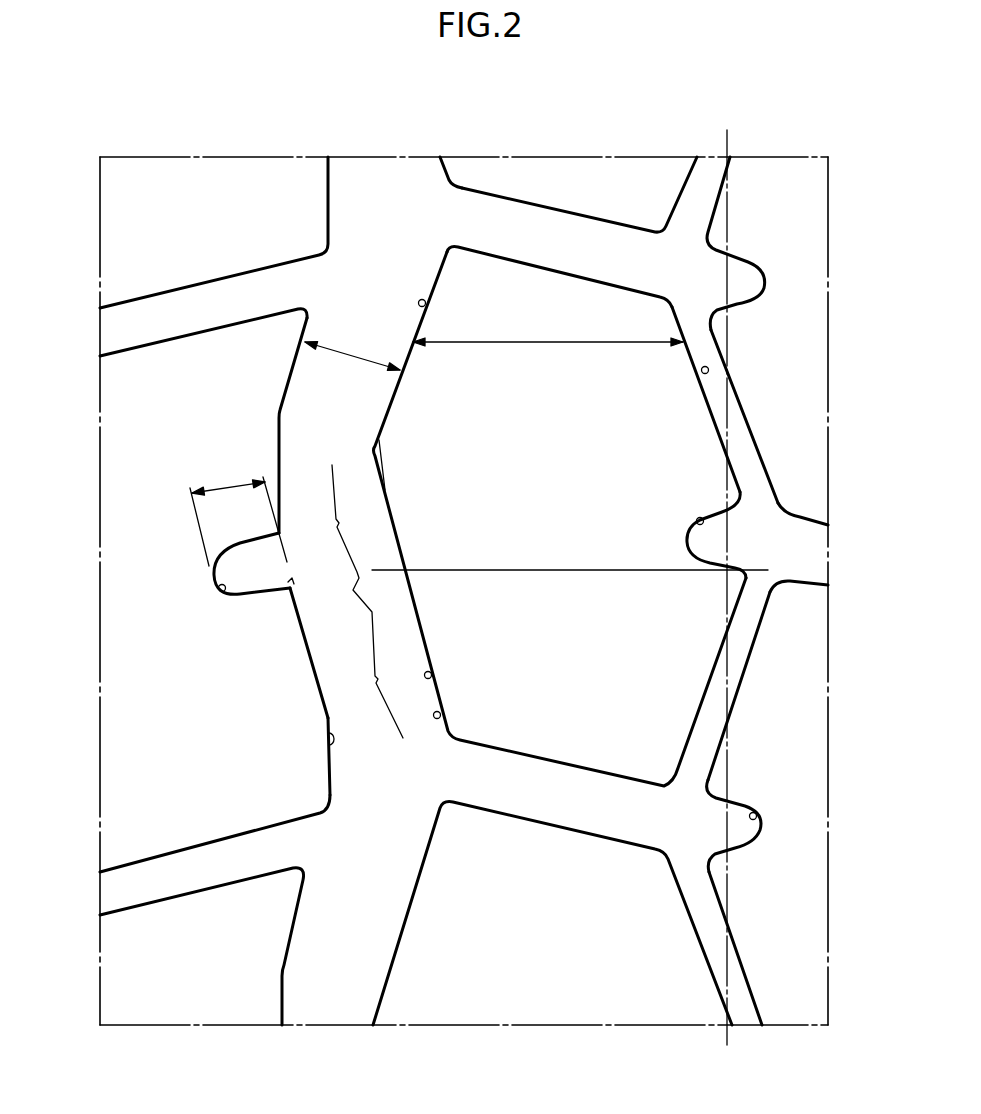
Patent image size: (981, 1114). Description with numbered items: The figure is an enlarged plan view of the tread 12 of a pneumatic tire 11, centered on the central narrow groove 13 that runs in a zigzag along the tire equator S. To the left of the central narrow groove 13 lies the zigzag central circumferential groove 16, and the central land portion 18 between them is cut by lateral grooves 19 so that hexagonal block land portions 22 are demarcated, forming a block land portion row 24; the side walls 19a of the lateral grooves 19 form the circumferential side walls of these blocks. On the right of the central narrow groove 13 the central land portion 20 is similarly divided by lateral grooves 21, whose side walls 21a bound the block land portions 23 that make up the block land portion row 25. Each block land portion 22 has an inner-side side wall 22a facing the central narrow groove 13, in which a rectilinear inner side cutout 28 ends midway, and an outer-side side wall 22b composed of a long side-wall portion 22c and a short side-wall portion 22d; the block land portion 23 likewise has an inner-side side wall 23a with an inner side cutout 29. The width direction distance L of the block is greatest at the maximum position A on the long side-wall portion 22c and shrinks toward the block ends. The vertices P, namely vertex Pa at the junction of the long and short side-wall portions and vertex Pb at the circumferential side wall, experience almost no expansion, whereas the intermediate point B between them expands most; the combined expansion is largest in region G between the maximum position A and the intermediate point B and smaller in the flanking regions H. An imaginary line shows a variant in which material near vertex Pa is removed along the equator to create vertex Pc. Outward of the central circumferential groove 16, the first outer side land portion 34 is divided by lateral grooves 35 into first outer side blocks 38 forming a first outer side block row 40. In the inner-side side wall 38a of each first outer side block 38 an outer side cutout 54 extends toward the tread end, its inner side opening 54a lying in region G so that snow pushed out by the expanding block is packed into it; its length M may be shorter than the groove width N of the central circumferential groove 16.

The pneumatic tire 11 is at (570, 130).
The tread 12 is at (268, 154).
The central narrow groove 13 is at (742, 443).
The central circumferential groove 16 is at (393, 183).
The central land portion 18 is at (613, 154).
The lateral groove 19 is at (570, 233).
The side wall of lateral groove 19a is at (605, 283).
The central land portion 20 is at (822, 150).
The lateral groove 21 is at (803, 545).
The side wall of lateral groove 21a is at (813, 583).
The block land portion 22 is at (600, 752).
The inner-side side wall 22a is at (705, 370).
The outer-side side wall 22b is at (428, 675).
The long side-wall portion 22c is at (437, 715).
The short side-wall portion 22d is at (425, 303).
The block land portion 23 is at (803, 750).
The inner-side side wall 23a is at (748, 675).
The block land portion row 24 is at (505, 154).
The block land portion row 25 is at (773, 154).
The inner side cutout 28 is at (700, 521).
The inner side cutout 29 is at (757, 817).
The first outer side land portion 34 is at (222, 154).
The lateral groove 35 is at (135, 320).
The first outer side block 38 is at (237, 345).
The inner-side side wall of first outer side block 38a is at (328, 739).
The first outer side block row 40 is at (160, 154).
The outer side cutout 54 is at (222, 588).
The inner side opening of outer side cutout 54a is at (290, 590).
The tire equator S is at (727, 137).
The tire width direction distance L is at (548, 329).
The groove width of central circumferential groove N is at (352, 348).
The length of outer side cutout M is at (238, 515).
The maximum position A is at (403, 570).
The intermediate point B is at (417, 607).
The vertex P is at (372, 454).
The vertex Pa is at (367, 446).
The vertex Pb is at (453, 747).
The vertex Pc is at (386, 495).
The region H is at (356, 601).
The region G is at (336, 604).